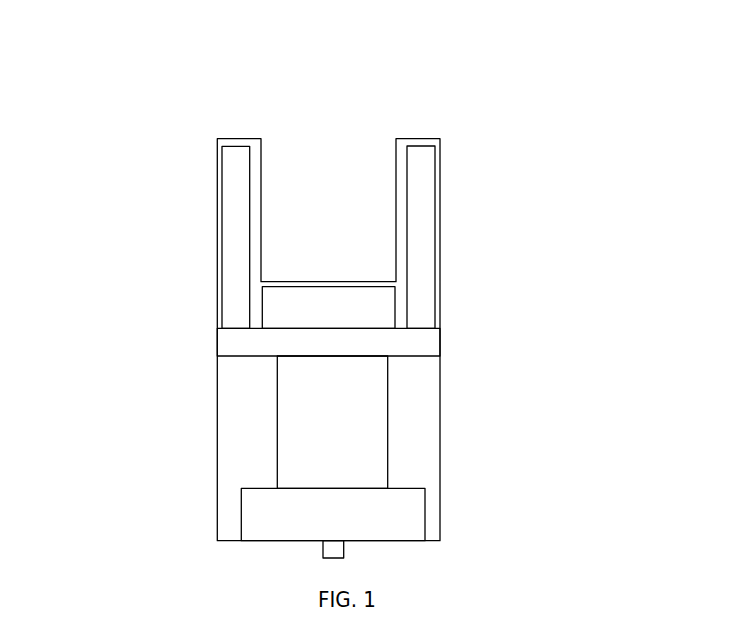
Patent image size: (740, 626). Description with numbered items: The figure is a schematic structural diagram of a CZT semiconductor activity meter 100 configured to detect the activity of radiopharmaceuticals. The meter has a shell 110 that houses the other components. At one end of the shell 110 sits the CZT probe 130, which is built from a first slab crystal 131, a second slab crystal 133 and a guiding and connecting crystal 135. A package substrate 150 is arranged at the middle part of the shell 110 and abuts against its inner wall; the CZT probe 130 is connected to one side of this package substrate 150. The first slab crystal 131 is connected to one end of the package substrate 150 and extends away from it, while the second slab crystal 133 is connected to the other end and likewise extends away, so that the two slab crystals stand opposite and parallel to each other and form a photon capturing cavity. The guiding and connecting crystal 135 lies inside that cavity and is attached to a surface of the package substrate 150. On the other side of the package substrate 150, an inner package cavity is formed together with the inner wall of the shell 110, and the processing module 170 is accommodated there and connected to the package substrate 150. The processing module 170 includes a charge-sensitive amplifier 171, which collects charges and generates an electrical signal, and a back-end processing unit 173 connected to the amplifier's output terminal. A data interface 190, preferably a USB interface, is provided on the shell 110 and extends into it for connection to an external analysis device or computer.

The CZT semiconductor activity meter 100 is at (408, 103).
The shell 110 is at (217, 300).
The CZT probe 130 is at (431, 232).
The first slab crystal 131 is at (250, 210).
The second slab crystal 133 is at (421, 237).
The guiding and connecting crystal 135 is at (383, 302).
The package substrate 150 is at (428, 341).
The processing module 170 is at (323, 448).
The charge-sensitive amplifier 171 is at (373, 445).
The back-end processing unit 173 is at (415, 514).
The data interface 190 is at (335, 550).